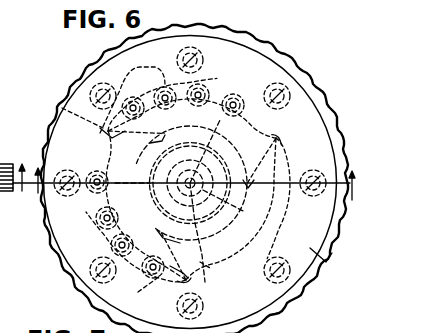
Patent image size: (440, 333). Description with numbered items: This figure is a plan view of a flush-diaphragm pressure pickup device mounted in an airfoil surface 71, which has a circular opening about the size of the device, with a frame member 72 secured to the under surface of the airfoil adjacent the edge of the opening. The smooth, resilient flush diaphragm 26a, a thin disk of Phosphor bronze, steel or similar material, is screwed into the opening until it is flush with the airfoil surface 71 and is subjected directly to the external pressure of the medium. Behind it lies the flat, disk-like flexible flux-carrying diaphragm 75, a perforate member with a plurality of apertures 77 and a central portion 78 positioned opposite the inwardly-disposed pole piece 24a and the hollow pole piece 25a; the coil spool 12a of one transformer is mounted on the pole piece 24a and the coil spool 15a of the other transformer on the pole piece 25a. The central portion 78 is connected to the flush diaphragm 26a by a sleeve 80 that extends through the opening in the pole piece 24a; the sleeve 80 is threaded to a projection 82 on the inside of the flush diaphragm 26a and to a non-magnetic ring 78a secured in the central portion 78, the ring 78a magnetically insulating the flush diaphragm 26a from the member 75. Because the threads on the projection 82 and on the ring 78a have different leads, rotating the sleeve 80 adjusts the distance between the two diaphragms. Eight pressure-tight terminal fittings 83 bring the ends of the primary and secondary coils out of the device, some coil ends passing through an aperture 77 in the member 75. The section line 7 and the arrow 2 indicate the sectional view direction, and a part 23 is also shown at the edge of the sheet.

The direction arrow 2 is at (20, 198).
The section line 7 is at (189, 191).
The coil spool 12a is at (280, 157).
The coil spool 15a is at (366, 147).
The shaft member 23 is at (8, 158).
The pole piece 24a is at (218, 134).
The hollow pole piece 25a is at (259, 144).
The flush diaphragm 26a is at (332, 258).
The airfoil surface 71 is at (72, 288).
The frame member 72 is at (92, 311).
The flux-carrying diaphragm 75 is at (62, 108).
The apertures 77 is at (203, 280).
The central portion 78 is at (220, 234).
The ring 78a is at (211, 255).
The sleeve 80 is at (189, 201).
The projection 82 is at (136, 170).
The terminal fittings 83 is at (165, 80).